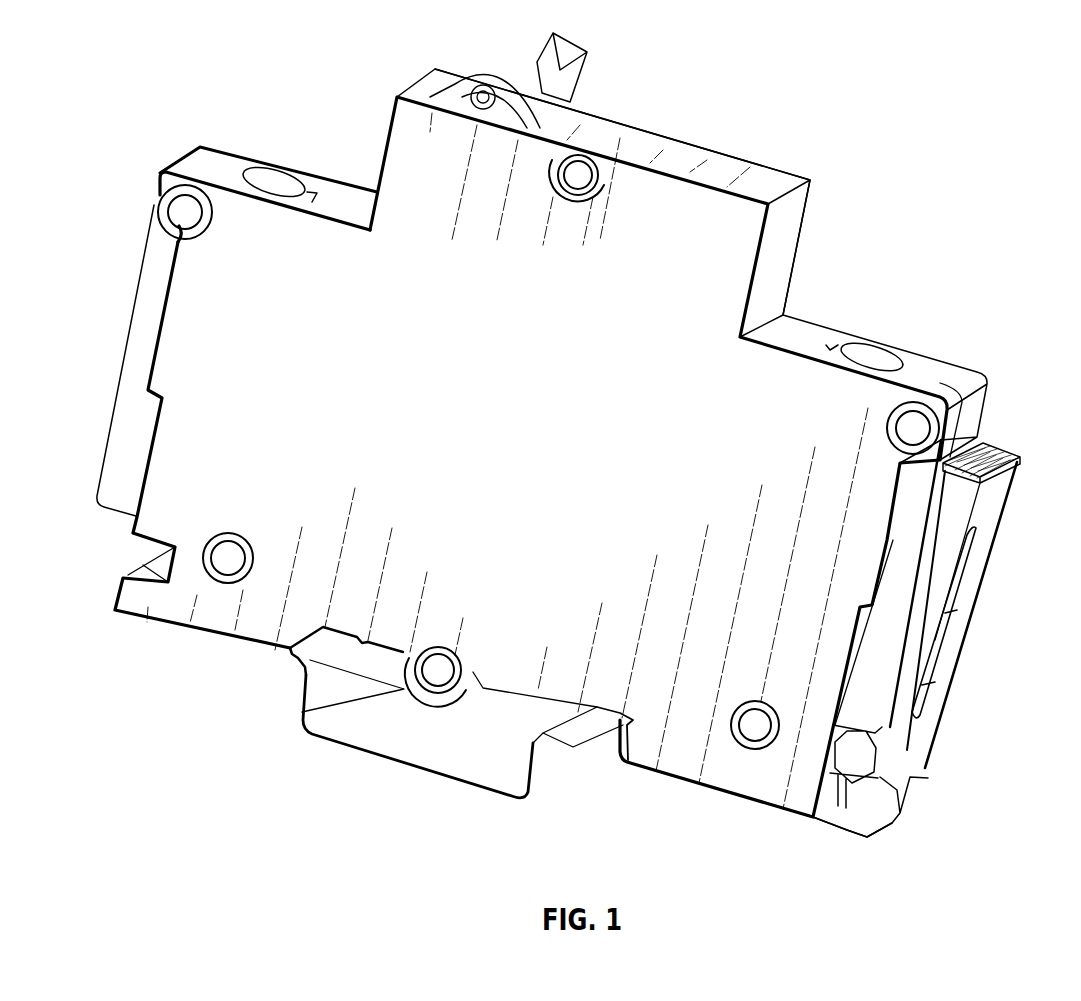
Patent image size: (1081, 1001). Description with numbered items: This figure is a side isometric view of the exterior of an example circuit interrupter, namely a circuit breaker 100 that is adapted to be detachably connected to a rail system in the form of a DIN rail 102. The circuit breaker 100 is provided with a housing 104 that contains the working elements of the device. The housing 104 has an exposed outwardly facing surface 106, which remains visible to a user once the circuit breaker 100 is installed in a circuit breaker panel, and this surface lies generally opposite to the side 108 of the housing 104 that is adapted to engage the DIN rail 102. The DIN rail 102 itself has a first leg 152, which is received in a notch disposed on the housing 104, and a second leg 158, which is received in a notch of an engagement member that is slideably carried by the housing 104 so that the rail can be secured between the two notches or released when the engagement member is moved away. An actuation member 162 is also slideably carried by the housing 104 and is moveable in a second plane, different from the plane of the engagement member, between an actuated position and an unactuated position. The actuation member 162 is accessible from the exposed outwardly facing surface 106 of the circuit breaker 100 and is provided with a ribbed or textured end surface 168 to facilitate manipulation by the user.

The circuit breaker 100 is at (733, 84).
The DIN rail 102 is at (413, 747).
The housing 104 is at (172, 313).
The exposed outwardly facing surface 106 is at (778, 170).
The side of the housing 108 is at (748, 750).
The first leg 152 is at (285, 662).
The second leg 158 is at (590, 727).
The actuation member 162 is at (992, 508).
The ribbed or textured end surface 168 is at (992, 450).